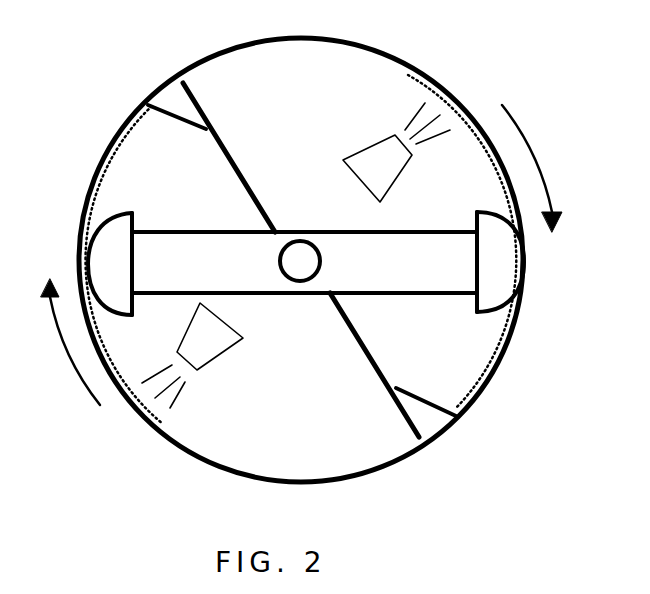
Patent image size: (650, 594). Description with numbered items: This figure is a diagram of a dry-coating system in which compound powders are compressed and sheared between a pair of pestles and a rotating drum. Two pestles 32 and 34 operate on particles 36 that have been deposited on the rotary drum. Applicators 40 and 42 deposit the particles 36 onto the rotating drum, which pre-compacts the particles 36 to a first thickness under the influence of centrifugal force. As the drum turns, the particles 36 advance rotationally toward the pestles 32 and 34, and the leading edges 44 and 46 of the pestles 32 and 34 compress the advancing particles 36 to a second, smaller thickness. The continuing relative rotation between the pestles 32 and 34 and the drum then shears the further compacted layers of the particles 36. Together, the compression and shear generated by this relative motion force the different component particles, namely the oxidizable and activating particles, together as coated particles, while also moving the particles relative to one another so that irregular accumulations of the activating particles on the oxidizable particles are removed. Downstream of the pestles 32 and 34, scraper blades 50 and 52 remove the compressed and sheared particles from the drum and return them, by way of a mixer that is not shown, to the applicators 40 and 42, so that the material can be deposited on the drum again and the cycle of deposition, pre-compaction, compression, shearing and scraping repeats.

The pestle 32 is at (127, 230).
The pestle 34 is at (488, 289).
The particles 36 is at (338, 45).
The applicator 40 is at (222, 348).
The applicator 42 is at (370, 158).
The leading edge 44 is at (114, 311).
The leading edge 46 is at (493, 214).
The scraper blade 50 is at (427, 399).
The scraper blade 52 is at (170, 116).